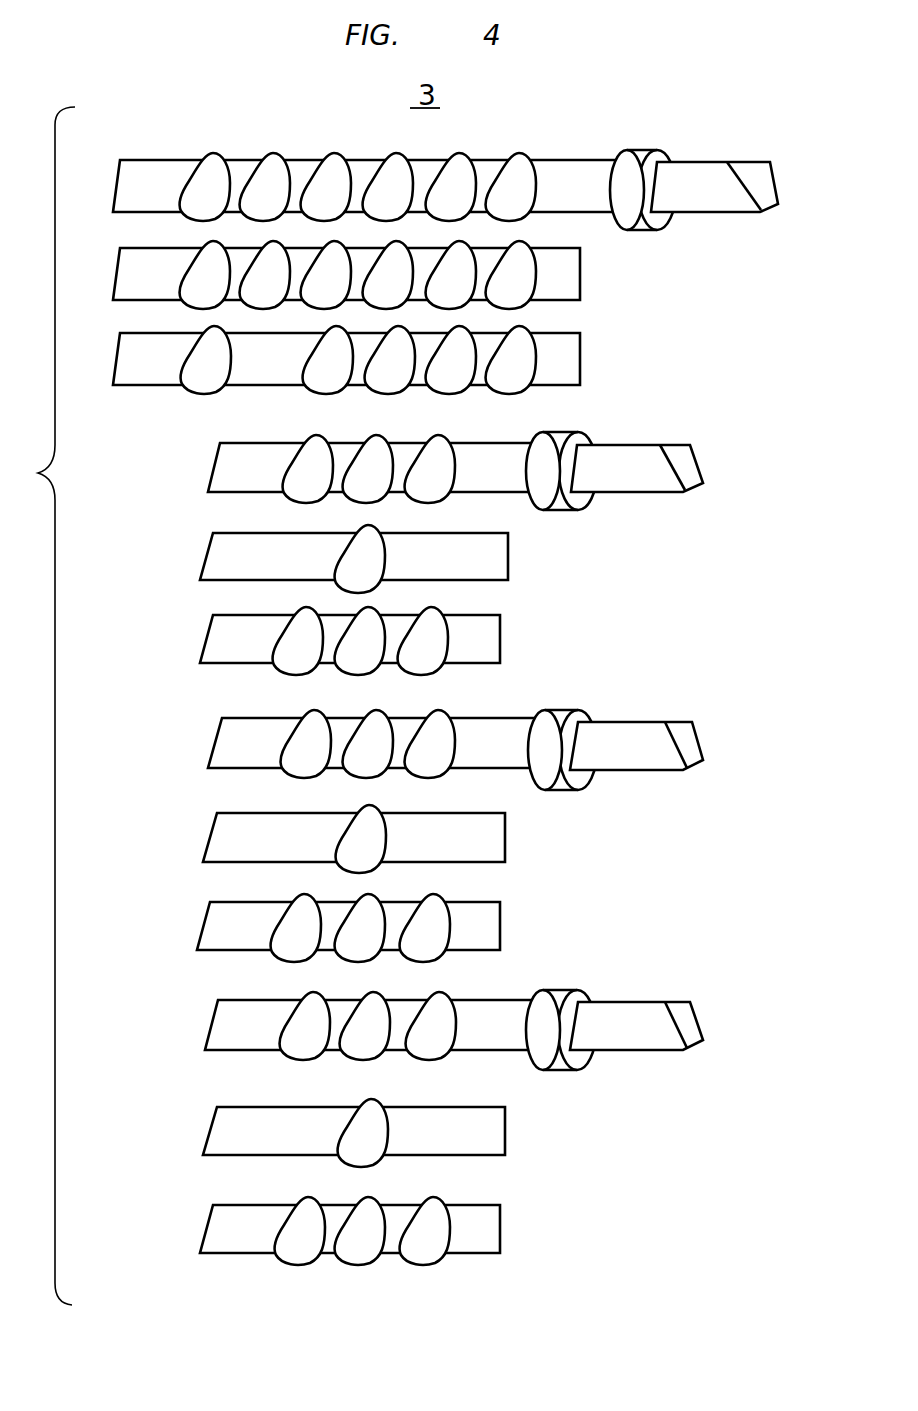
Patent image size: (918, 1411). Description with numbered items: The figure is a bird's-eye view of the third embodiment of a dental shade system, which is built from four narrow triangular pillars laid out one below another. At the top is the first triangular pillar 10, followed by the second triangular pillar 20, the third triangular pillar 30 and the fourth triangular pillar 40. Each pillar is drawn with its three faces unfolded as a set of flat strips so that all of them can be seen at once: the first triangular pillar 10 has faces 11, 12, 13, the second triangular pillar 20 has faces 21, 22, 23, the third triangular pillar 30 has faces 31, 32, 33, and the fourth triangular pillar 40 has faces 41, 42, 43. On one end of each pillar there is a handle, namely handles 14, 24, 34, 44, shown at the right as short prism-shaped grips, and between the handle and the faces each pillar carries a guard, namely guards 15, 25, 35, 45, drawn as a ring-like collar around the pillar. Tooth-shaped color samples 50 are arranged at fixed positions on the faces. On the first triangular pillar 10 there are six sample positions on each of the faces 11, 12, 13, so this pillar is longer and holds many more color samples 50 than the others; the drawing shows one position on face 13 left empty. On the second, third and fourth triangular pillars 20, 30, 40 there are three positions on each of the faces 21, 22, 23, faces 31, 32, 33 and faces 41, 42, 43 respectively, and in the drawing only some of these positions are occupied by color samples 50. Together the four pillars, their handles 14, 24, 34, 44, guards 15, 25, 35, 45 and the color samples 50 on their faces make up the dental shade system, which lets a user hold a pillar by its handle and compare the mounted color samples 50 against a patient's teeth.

The first triangular pillar 10 is at (464, 243).
The face of first triangular pillar 11 is at (133, 172).
The face of first triangular pillar 12 is at (130, 265).
The face of first triangular pillar 13 is at (130, 352).
The handle 14 is at (716, 203).
The guard 15 is at (624, 152).
The second triangular pillar 20 is at (463, 526).
The face of second triangular pillar 21 is at (222, 465).
The face of second triangular pillar 22 is at (215, 557).
The face of second triangular pillar 23 is at (212, 640).
The handle 24 is at (645, 480).
The guard 25 is at (557, 440).
The third triangular pillar 30 is at (467, 805).
The face of third triangular pillar 31 is at (222, 745).
The face of third triangular pillar 32 is at (215, 840).
The face of third triangular pillar 33 is at (212, 925).
The handle 34 is at (648, 760).
The guard 35 is at (555, 712).
The fourth triangular pillar 40 is at (463, 1099).
The face of fourth triangular pillar 41 is at (218, 1028).
The face of fourth triangular pillar 42 is at (215, 1130).
The face of fourth triangular pillar 43 is at (210, 1235).
The handle 44 is at (640, 1040).
The guard 45 is at (555, 995).
The color samples 50 is at (212, 165).